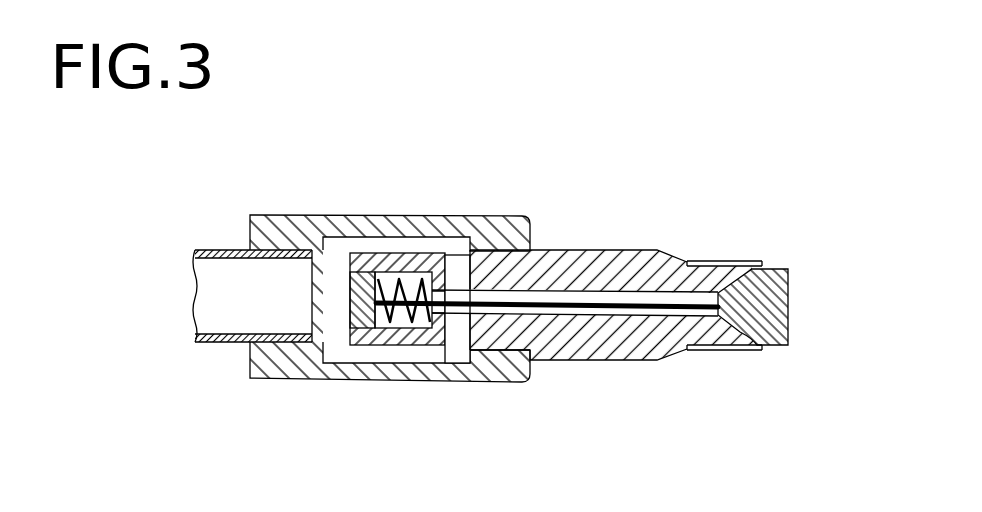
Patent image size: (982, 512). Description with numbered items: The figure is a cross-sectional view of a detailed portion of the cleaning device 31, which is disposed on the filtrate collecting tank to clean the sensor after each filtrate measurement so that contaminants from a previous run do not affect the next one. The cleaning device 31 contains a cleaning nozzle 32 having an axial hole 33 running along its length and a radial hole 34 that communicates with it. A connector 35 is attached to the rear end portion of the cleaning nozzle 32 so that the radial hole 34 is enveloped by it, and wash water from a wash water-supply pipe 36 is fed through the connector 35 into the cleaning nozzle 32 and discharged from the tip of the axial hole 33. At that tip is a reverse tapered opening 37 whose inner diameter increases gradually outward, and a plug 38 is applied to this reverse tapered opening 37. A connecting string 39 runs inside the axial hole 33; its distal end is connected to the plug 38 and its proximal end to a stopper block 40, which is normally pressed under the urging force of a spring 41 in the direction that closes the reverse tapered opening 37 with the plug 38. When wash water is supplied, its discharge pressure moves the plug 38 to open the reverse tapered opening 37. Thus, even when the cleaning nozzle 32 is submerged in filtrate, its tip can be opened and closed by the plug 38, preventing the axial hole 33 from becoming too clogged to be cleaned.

The cleaning device 31 is at (492, 193).
The cleaning nozzle 32 is at (687, 262).
The axial hole 33 is at (528, 293).
The radial hole 34 is at (451, 332).
The connector 35 is at (309, 366).
The wash water-supply pipe 36 is at (207, 249).
The reverse tapered opening 37 is at (770, 352).
The plug 38 is at (777, 288).
The connecting string 39 is at (637, 311).
The stopper block 40 is at (360, 260).
The spring 41 is at (410, 292).